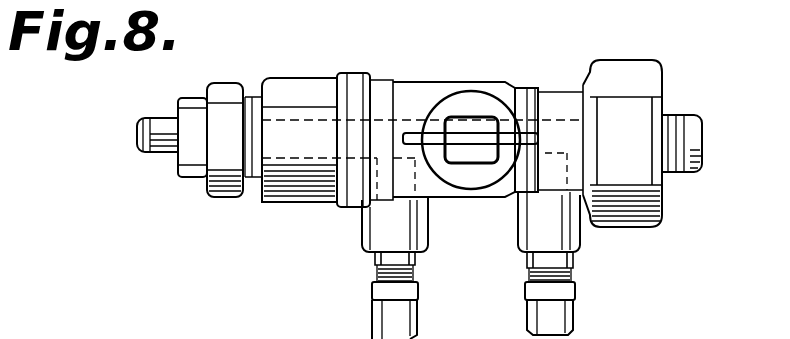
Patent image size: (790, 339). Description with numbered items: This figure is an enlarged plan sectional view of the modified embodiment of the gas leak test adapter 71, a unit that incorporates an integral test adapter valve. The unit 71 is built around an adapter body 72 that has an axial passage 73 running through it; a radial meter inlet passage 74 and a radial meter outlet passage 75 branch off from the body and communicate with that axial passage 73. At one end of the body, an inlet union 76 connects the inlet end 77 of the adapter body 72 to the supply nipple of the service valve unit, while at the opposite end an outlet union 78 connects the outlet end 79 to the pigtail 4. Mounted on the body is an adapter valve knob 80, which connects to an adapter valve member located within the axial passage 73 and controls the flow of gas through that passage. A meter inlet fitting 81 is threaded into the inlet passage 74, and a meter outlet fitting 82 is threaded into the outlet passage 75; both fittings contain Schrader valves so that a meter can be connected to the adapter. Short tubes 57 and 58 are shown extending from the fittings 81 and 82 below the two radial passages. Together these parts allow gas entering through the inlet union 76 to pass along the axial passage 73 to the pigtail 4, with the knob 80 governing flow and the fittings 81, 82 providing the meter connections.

The pigtail 4 is at (160, 142).
The tube 57 is at (578, 312).
The tube 58 is at (372, 321).
The gas leak test adapter 71 is at (449, 80).
The adapter body 72 is at (413, 80).
The axial passage 73 is at (555, 127).
The radial meter inlet passage 74 is at (580, 250).
The radial meter outlet passage 75 is at (372, 232).
The inlet union 76 is at (680, 115).
The inlet end 77 is at (626, 68).
The outlet union 78 is at (226, 92).
The outlet end 79 is at (285, 88).
The adapter valve knob 80 is at (476, 118).
The meter inlet fitting 81 is at (575, 278).
The meter outlet fitting 82 is at (376, 277).